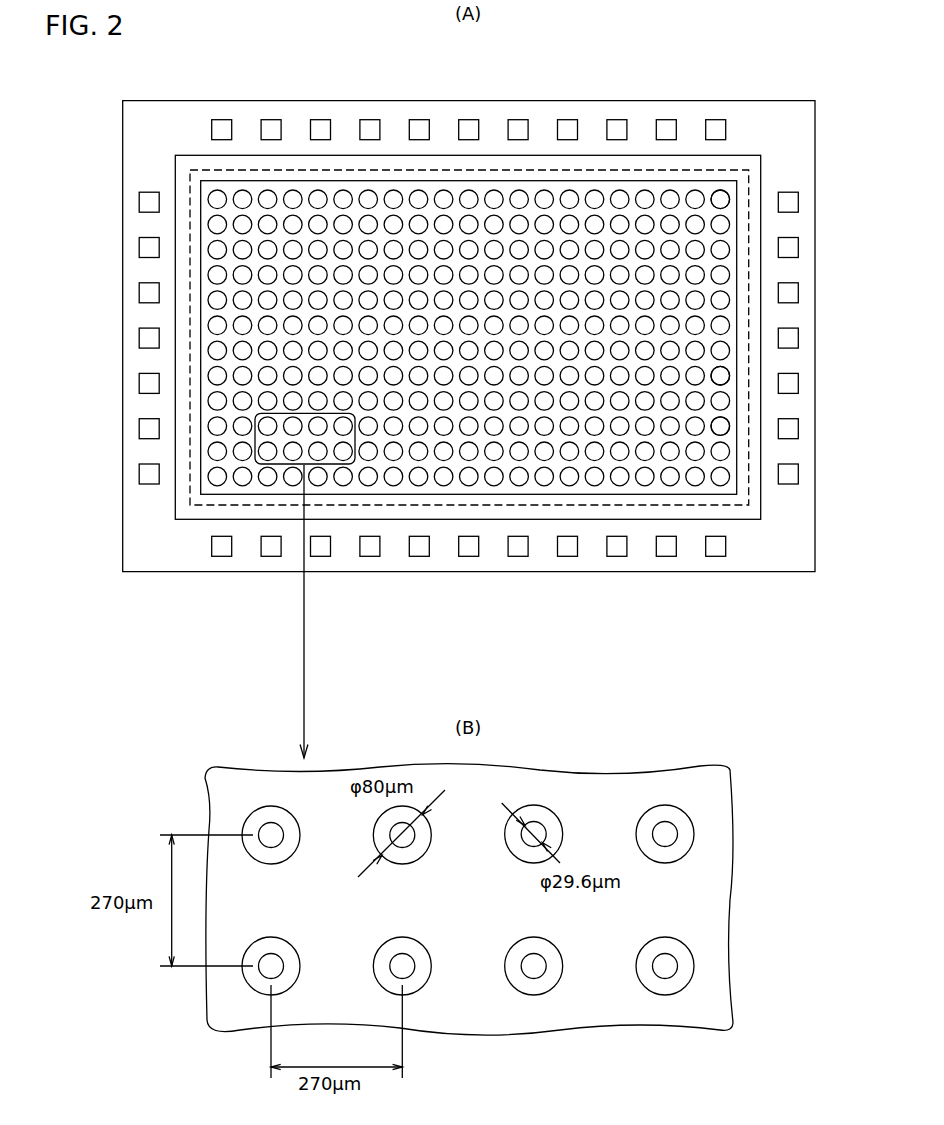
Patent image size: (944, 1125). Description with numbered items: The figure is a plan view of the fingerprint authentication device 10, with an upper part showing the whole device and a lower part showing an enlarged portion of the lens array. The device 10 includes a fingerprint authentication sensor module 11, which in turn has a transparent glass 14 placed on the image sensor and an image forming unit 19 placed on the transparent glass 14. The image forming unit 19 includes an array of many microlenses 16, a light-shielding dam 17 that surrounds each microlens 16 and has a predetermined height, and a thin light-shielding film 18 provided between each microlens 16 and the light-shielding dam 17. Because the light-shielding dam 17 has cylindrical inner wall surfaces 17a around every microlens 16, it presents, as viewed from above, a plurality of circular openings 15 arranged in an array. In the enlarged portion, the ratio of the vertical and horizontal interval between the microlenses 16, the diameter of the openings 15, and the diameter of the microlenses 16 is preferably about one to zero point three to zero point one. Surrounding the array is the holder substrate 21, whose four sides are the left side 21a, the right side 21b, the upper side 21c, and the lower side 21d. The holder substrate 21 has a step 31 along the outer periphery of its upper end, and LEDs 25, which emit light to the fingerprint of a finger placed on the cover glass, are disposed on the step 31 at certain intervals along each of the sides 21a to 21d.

The fingerprint authentication device 10 is at (641, 72).
The fingerprint authentication sensor module 11 is at (738, 227).
The transparent glass 14 is at (295, 181).
The openings 15 is at (727, 193).
The microlenses 16 is at (721, 376).
The light-shielding dam 17 is at (734, 487).
The cylindrical inner wall surfaces 17a is at (724, 428).
The light-shielding film 18 is at (690, 548).
The image forming unit 19 is at (681, 928).
The holder substrate 21 is at (798, 423).
The left side of the holder substrate 21a is at (143, 272).
The right side of the holder substrate 21b is at (797, 315).
The upper side of the holder substrate 21c is at (395, 125).
The lower side of the holder substrate 21d is at (492, 548).
The LEDs 25 is at (790, 247).
The step 31 is at (135, 452).